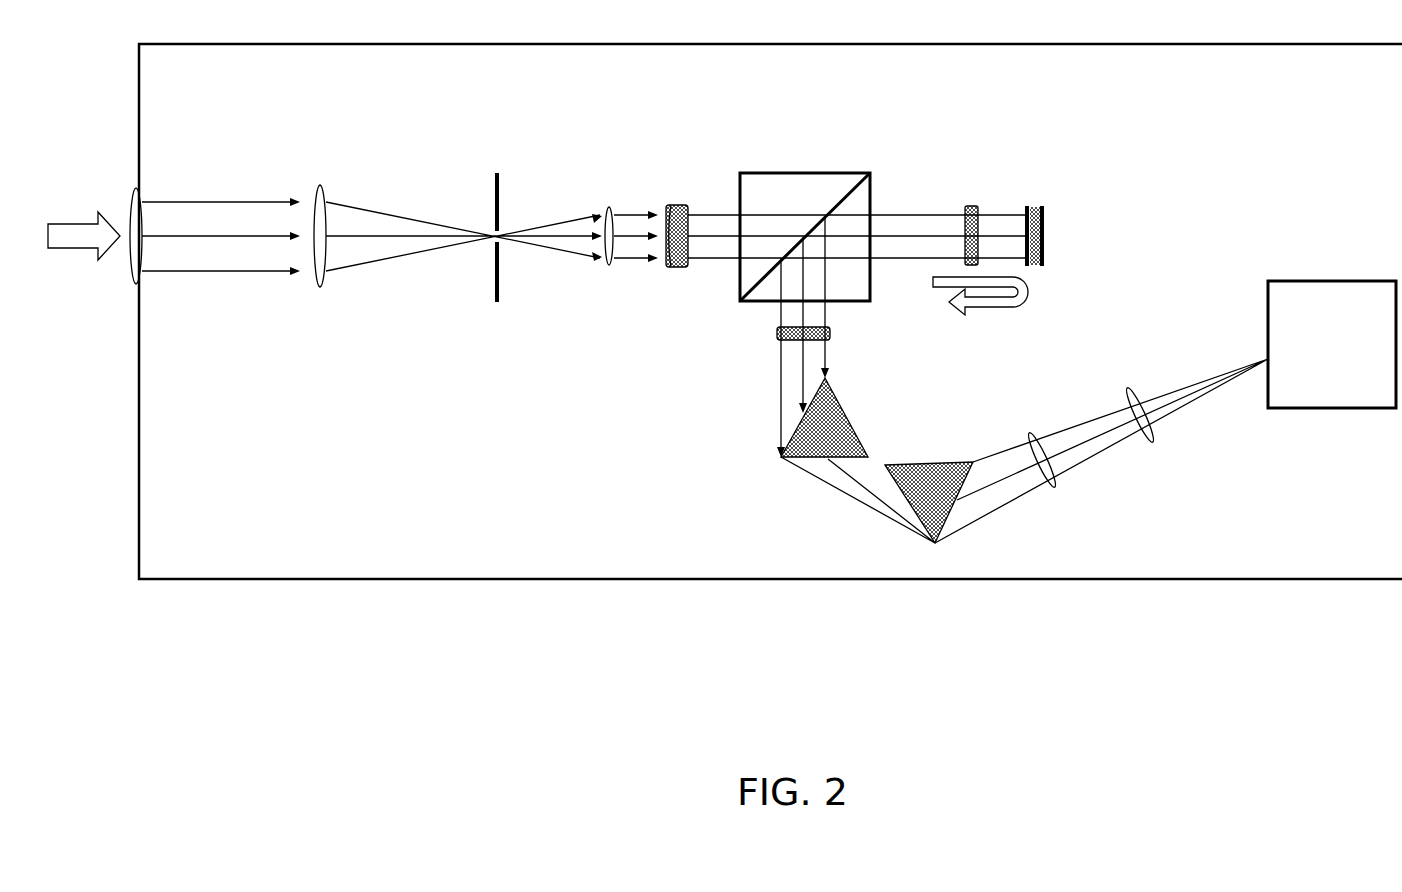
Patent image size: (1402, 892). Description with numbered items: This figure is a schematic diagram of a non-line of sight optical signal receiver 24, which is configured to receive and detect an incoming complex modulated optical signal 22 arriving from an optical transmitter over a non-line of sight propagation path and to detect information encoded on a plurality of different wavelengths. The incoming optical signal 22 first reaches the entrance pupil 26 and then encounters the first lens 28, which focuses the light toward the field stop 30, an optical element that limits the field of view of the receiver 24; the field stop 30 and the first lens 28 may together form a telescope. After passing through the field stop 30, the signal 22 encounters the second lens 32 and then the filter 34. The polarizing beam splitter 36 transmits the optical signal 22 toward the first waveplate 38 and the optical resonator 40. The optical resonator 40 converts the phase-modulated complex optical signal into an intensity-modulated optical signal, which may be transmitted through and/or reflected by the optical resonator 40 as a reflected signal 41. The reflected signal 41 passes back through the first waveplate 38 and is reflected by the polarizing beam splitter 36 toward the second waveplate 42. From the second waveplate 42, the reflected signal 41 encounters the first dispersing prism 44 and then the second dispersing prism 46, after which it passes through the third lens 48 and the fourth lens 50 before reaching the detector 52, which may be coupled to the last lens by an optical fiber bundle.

The incoming complex modulated optical signal 22 is at (80, 207).
The non-line of sight optical signal receiver 24 is at (770, 311).
The entrance pupil 26 is at (141, 190).
The first lens 28 is at (327, 189).
The field stop 30 is at (476, 271).
The second lens 32 is at (613, 207).
The filter 34 is at (668, 268).
The polarizing beam splitter 36 is at (871, 191).
The first waveplate 38 is at (982, 206).
The optical resonator 40 is at (1046, 210).
The reflected signal 41 is at (1010, 313).
The second waveplate 42 is at (772, 341).
The first dispersing prism 44 is at (860, 440).
The second dispersing prism 46 is at (940, 463).
The third lens 48 is at (1031, 433).
The fourth lens 50 is at (1153, 442).
The detector 52 is at (1342, 410).